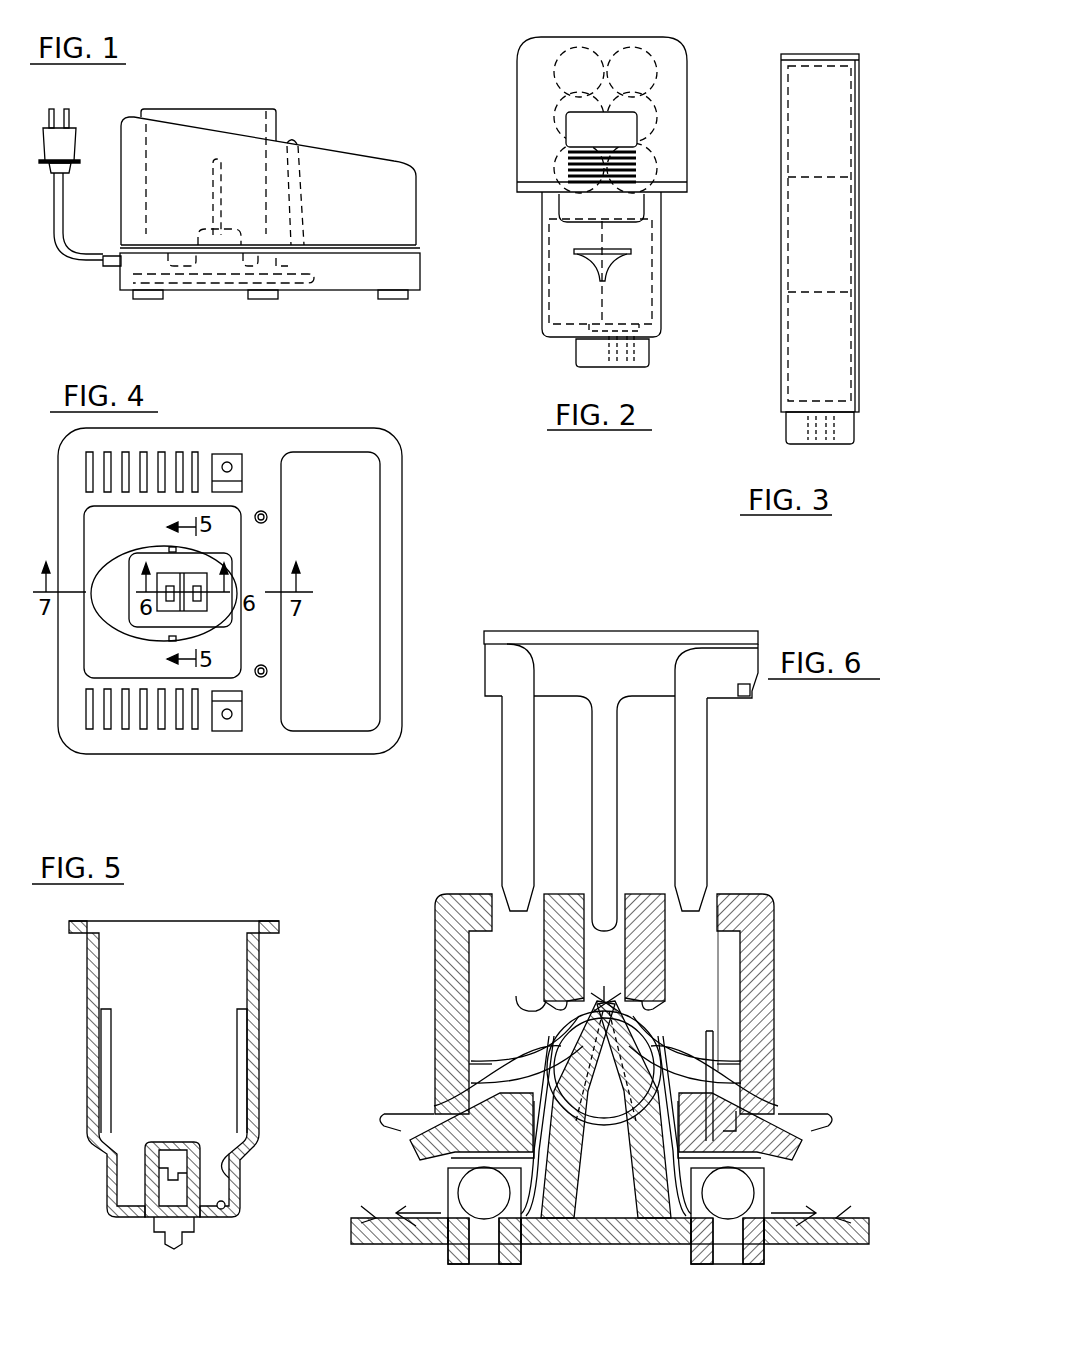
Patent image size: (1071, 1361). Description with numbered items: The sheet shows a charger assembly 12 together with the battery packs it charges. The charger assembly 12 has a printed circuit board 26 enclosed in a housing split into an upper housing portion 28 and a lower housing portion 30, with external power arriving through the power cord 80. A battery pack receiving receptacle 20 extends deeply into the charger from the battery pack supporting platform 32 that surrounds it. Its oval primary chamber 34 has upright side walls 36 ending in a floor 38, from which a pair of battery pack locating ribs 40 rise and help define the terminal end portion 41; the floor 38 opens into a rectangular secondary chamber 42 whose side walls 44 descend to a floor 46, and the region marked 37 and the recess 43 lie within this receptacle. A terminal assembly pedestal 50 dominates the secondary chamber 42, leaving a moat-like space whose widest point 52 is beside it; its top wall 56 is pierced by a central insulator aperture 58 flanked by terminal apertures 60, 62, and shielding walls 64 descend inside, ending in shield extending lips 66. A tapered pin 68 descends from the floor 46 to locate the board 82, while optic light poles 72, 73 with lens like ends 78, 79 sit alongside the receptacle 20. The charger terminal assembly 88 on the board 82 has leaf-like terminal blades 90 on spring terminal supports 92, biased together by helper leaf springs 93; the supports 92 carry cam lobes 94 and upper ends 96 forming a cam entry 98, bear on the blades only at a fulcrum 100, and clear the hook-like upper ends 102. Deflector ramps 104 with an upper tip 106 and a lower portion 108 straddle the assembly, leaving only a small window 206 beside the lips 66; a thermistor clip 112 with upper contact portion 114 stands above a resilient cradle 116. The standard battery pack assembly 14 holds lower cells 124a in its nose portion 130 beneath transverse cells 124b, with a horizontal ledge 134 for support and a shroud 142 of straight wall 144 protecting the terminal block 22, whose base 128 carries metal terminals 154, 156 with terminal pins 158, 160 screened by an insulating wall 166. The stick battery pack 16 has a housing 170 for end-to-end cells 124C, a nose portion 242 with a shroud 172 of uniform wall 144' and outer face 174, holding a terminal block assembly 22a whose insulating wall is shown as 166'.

In FIG. 1, the charger assembly 12 is at (325, 114).
In FIG. 4, the charger assembly 12 is at (398, 424).
In FIG. 2, the battery pack assembly 14 is at (501, 54).
In FIG. 3, the stick battery pack 16 is at (764, 66).
In FIG. 1, the receptacle 20 is at (211, 74).
In FIG. 4, the receptacle 20 is at (88, 548).
In FIG. 5, the receptacle 20 is at (174, 902).
In FIG. 2, the terminal block 22 is at (621, 364).
In FIG. 6, the terminal block 22 is at (575, 608).
In FIG. 3, the terminal block assembly 22a is at (830, 439).
In FIG. 1, the printed circuit board 26 is at (287, 283).
In FIG. 6, the printed circuit board 26 is at (365, 1208).
In FIG. 1, the upper housing portion 28 is at (422, 184).
In FIG. 1, the lower housing portion 30 is at (420, 261).
In FIG. 1, the battery pack supporting platform 32 is at (174, 101).
In FIG. 4, the battery pack supporting platform 32 is at (114, 523).
In FIG. 5, the battery pack supporting platform 32 is at (246, 913).
In FIG. 1, the primary chamber 34 is at (246, 109).
In FIG. 4, the primary chamber 34 is at (104, 623).
In FIG. 5, the primary chamber 34 is at (126, 925).
In FIG. 5, the side walls 36 is at (92, 965).
In FIG. 4, the recess 37 is at (97, 566).
In FIG. 5, the recess 37 is at (176, 1052).
In FIG. 5, the floor 38 is at (119, 1139).
In FIG. 4, the battery pack locating ribs 40 is at (163, 541).
In FIG. 5, the battery pack locating ribs 40 is at (104, 1028).
In FIG. 4, the terminal end portion 41 is at (196, 624).
In FIG. 1, the secondary chamber 42 is at (170, 231).
In FIG. 4, the secondary chamber 42 is at (113, 595).
In FIG. 5, the secondary chamber 42 is at (129, 1172).
In FIG. 5, the cavity 43 is at (136, 1164).
In FIG. 5, the side walls 44 is at (216, 1144).
In FIG. 5, the floor 46 is at (209, 1202).
In FIG. 6, the floor 46 is at (395, 1120).
In FIG. 4, the terminal assembly pedestal 50 is at (200, 548).
In FIG. 5, the terminal assembly pedestal 50 is at (173, 1123).
In FIG. 6, the terminal assembly pedestal 50 is at (410, 998).
In FIG. 6, the widest point 52 is at (410, 1057).
In FIG. 5, the top wall 56 is at (151, 1137).
In FIG. 6, the top wall 56 is at (455, 895).
In FIG. 6, the insulator aperture 58 is at (590, 890).
In FIG. 6, the terminal aperture 60 is at (505, 892).
In FIG. 6, the terminal aperture 62 is at (705, 890).
In FIG. 6, the shielding walls 64 is at (492, 930).
In FIG. 6, the shield extending lips 66 is at (538, 996).
In FIG. 5, the tapered pin 68 is at (151, 1231).
In FIG. 1, the optic light pole 72 is at (284, 209).
In FIG. 4, the optic light pole 72 is at (265, 520).
In FIG. 4, the optic light pole 73 is at (264, 677).
In FIG. 4, the lens like end 78 is at (259, 504).
In FIG. 4, the lens like end 79 is at (260, 661).
In FIG. 1, the power cord 80 is at (50, 253).
In FIG. 6, the board 82 is at (370, 1243).
In FIG. 6, the charger terminal assembly 88 is at (600, 1205).
In FIG. 6, the terminal blades 90 is at (547, 1075).
In FIG. 6, the spring terminal support 92 is at (615, 1150).
In FIG. 6, the helper leaf springs 93 is at (545, 1220).
In FIG. 6, the cam lobes 94 is at (590, 1090).
In FIG. 6, the upper ends 96 is at (538, 980).
In FIG. 6, the cam entry 98 is at (595, 980).
In FIG. 6, the fulcrum 100 is at (475, 1040).
In FIG. 6, the hook-like upper ends 102 is at (470, 990).
In FIG. 6, the deflector ramps 104 is at (500, 1122).
In FIG. 6, the upper tip 106 is at (533, 1105).
In FIG. 6, the lower portion 108 is at (450, 1160).
In FIG. 6, the thermistor clip 112 is at (718, 1075).
In FIG. 6, the upper contact portion 114 is at (767, 985).
In FIG. 6, the resilient cradle 116 is at (745, 1120).
In FIG. 2, the lower cells 124a is at (541, 258).
In FIG. 2, the transverse cells 124b is at (541, 114).
In FIG. 3, the cells 124C is at (776, 254).
In FIG. 2, the base 128 is at (604, 314).
In FIG. 6, the base 128 is at (617, 625).
In FIG. 2, the nose portion 130 is at (538, 304).
In FIG. 2, the horizontal ledge 134 is at (631, 226).
In FIG. 2, the shroud 142 is at (561, 341).
In FIG. 2, the straight wall 144 is at (662, 343).
In FIG. 3, the wall 144' is at (826, 398).
In FIG. 6, the metal terminal 154 is at (487, 705).
In FIG. 6, the metal terminal 156 is at (714, 698).
In FIG. 6, the terminal pin 158 is at (494, 798).
In FIG. 6, the terminal pin 160 is at (699, 798).
In FIG. 2, the insulating wall 166 is at (560, 381).
In FIG. 6, the insulating wall 166 is at (604, 813).
In FIG. 3, the center pin 166' is at (748, 465).
In FIG. 3, the housing 170 is at (773, 156).
In FIG. 3, the shroud 172 is at (769, 420).
In FIG. 3, the outer face 174 is at (773, 409).
In FIG. 6, the window 206 is at (531, 1030).
In FIG. 3, the nose portion 242 is at (853, 243).